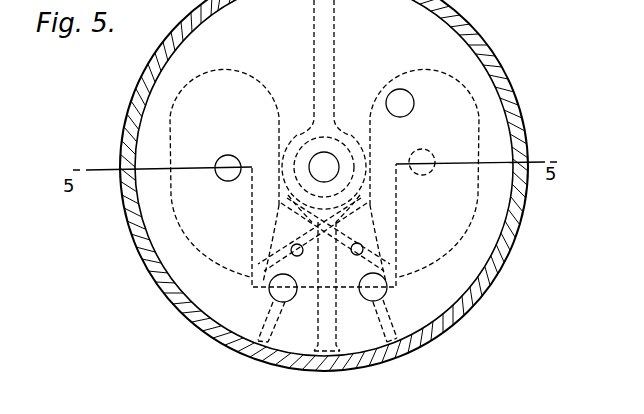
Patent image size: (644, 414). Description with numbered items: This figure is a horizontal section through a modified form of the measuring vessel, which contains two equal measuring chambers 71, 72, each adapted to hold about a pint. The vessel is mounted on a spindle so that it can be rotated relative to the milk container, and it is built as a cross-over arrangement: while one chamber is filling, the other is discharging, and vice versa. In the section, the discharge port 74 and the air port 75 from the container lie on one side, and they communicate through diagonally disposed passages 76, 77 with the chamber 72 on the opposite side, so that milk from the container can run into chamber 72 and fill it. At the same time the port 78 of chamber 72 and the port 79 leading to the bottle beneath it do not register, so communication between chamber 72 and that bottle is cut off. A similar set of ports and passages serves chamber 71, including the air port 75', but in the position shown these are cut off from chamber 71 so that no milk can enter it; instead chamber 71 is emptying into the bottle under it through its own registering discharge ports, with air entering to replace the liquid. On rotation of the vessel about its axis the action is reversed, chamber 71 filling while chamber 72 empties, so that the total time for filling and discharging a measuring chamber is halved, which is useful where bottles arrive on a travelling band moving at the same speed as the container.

The measuring chamber 71 is at (224, 173).
The measuring chamber 72 is at (424, 173).
The discharge port 74 is at (276, 293).
The air port 75 is at (255, 241).
The air port 75' is at (392, 240).
The diagonally disposed passage 76 is at (310, 280).
The diagonally disposed passage 77 is at (309, 240).
The port 78 is at (230, 174).
The port 79 is at (423, 176).